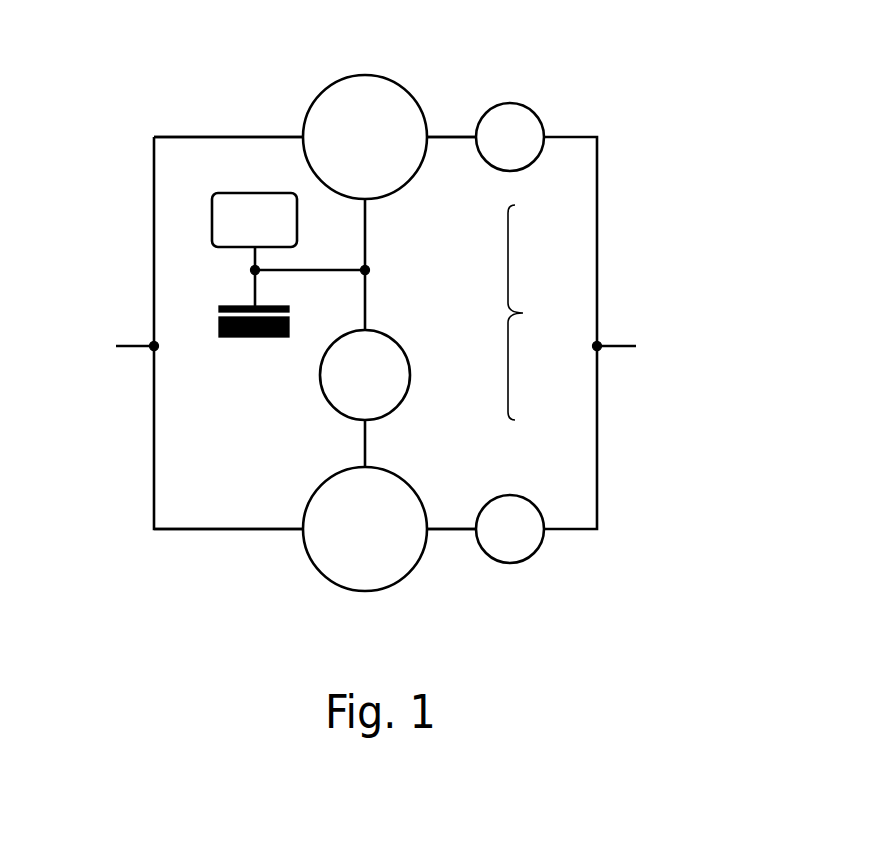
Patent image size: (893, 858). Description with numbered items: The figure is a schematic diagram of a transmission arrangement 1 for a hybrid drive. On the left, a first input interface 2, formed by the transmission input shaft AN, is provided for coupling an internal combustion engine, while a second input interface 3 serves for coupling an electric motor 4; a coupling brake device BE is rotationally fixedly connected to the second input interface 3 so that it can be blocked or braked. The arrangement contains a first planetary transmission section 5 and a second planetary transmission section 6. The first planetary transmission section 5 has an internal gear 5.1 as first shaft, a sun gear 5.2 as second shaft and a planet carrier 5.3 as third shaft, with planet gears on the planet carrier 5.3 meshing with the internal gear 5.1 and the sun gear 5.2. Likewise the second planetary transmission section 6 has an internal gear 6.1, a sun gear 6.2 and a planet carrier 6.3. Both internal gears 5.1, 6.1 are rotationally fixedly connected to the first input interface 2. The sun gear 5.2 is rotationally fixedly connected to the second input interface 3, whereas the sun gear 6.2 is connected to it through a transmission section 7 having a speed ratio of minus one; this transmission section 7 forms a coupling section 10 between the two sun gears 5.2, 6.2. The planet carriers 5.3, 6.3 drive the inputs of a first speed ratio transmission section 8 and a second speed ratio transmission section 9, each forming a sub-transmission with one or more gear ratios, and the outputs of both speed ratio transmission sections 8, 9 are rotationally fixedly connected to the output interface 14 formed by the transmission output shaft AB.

The transmission arrangement 1 is at (686, 80).
The first input interface 2 is at (130, 346).
The second input interface 3 is at (370, 270).
The electric motor 4 is at (250, 193).
The first planetary transmission section 5 is at (385, 75).
The internal gear of first planetary transmission section 5.1 is at (303, 137).
The sun gear of first planetary transmission section 5.2 is at (367, 203).
The planet carrier of first planetary transmission section 5.3 is at (430, 137).
The second planetary transmission section 6 is at (405, 580).
The internal gear of second planetary transmission section 6.1 is at (303, 529).
The sun gear of second planetary transmission section 6.2 is at (370, 466).
The planet carrier of second planetary transmission section 6.3 is at (432, 528).
The transmission section 7 is at (407, 345).
The first speed ratio transmission section 8 is at (532, 110).
The second speed ratio transmission section 9 is at (534, 552).
The coupling section 10 is at (534, 312).
The output interface 14 is at (612, 346).